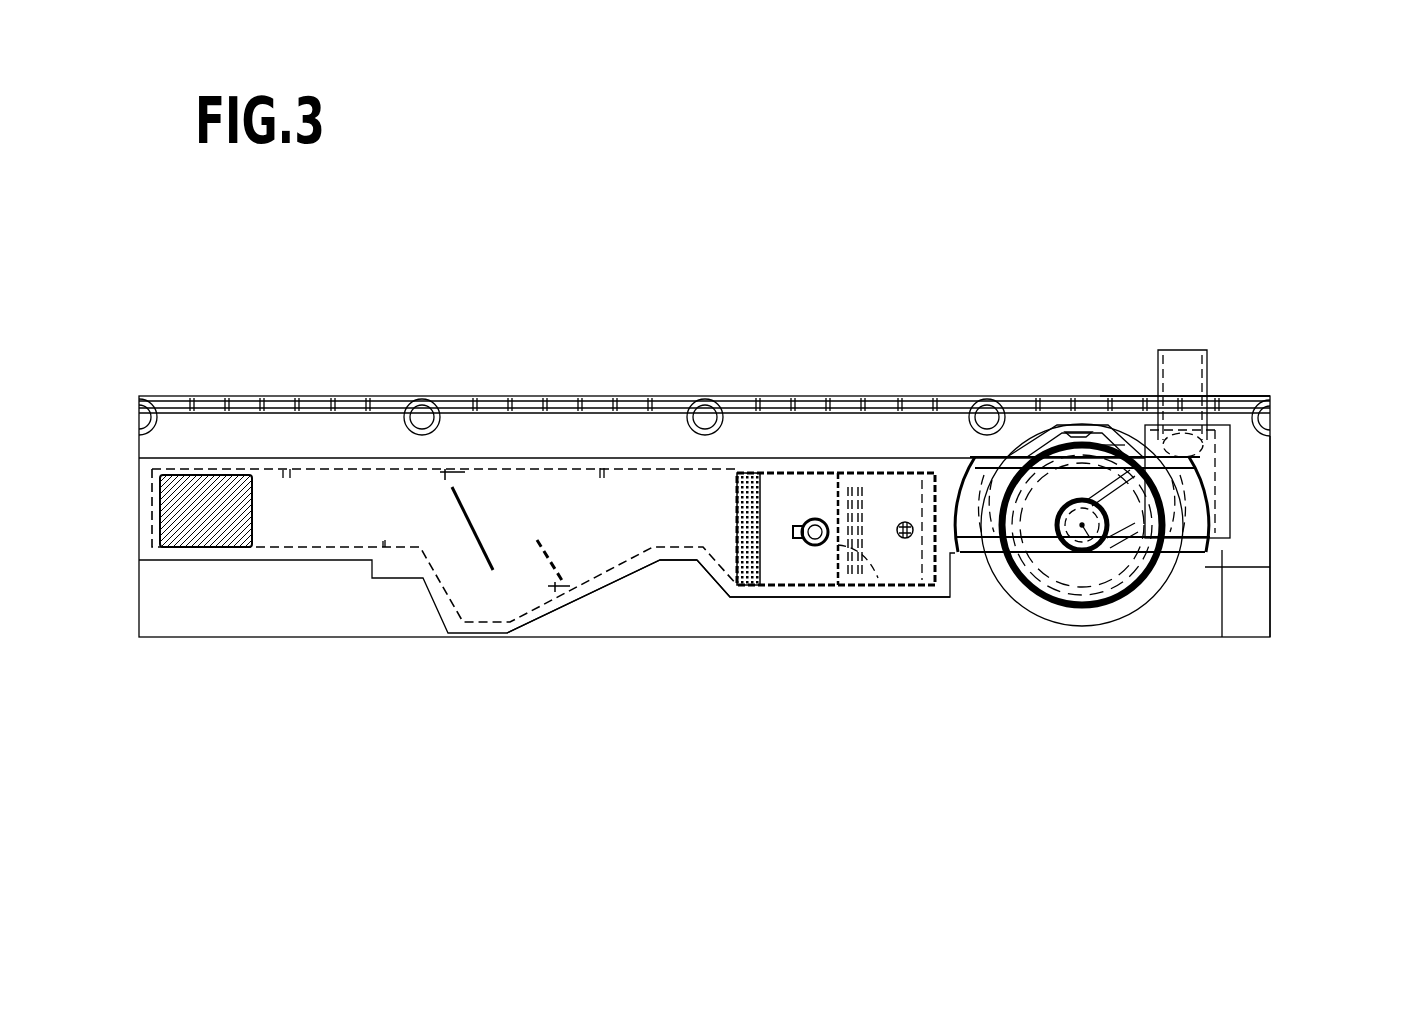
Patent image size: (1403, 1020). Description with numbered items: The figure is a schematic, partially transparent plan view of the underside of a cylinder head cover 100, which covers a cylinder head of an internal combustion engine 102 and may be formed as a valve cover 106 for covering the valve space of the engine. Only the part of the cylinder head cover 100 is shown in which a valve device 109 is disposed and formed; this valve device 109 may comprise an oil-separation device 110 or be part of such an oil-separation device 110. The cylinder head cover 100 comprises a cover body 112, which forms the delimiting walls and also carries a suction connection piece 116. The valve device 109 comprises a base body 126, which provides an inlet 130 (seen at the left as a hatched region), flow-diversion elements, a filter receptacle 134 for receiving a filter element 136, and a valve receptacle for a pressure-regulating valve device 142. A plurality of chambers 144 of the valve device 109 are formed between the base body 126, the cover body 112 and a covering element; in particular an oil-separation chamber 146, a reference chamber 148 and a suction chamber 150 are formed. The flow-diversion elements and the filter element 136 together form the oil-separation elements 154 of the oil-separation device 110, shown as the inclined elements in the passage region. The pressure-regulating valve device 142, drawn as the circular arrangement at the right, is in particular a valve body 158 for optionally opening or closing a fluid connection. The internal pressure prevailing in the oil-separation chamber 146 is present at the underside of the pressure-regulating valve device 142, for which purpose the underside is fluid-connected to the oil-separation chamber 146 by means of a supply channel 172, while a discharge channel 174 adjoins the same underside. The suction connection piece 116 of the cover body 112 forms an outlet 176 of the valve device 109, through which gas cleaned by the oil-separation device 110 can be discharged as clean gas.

The cylinder head cover 100 is at (1108, 233).
The internal combustion engine 102 is at (1025, 222).
The valve cover 106 is at (1182, 248).
The valve device 109 is at (1051, 603).
The oil-separation device 110 is at (836, 516).
The cover body 112 is at (1250, 460).
The suction connection piece 116 is at (1193, 365).
The base body 126 is at (592, 585).
The inlet 130 is at (222, 495).
The filter receptacle 134 is at (817, 476).
The filter element 136 is at (733, 575).
The pressure-regulating valve device 142 is at (1033, 440).
The chambers 144 is at (507, 548).
The oil-separation chamber 146 is at (586, 522).
The reference chamber 148 is at (1116, 422).
The suction chamber 150 is at (1210, 482).
The oil-separation elements 154 is at (490, 492).
The valve body 158 is at (1098, 452).
The supply channel 172 is at (1048, 527).
The discharge channel 174 is at (1092, 545).
The outlet 176 is at (1200, 385).